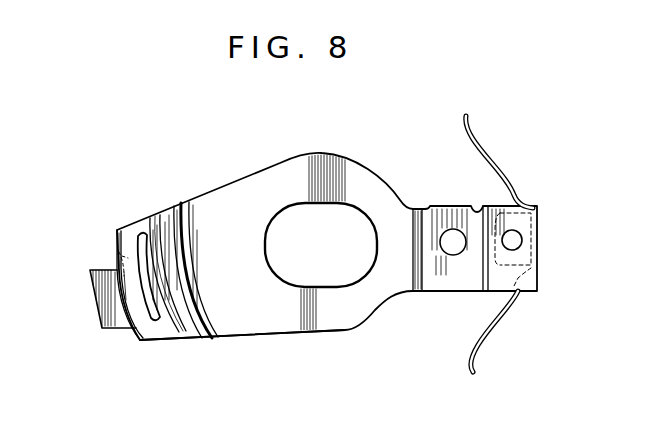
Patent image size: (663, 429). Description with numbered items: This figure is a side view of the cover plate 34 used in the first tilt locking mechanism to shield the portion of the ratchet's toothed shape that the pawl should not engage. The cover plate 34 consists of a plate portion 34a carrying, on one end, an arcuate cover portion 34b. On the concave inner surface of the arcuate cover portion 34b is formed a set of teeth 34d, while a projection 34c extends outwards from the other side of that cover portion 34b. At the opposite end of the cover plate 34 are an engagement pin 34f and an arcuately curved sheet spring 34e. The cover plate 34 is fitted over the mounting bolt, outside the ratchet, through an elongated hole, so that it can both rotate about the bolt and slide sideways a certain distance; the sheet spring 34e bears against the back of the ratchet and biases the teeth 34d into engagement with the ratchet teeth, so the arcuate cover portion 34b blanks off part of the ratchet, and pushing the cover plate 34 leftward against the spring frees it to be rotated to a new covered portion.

The cover plate 34 is at (305, 153).
The plate portion 34a is at (283, 324).
The arcuate cover portion 34b is at (117, 231).
The projection 34c is at (118, 320).
The teeth 34d is at (116, 256).
The sheet spring 34e is at (498, 332).
The engagement pin 34f is at (462, 253).